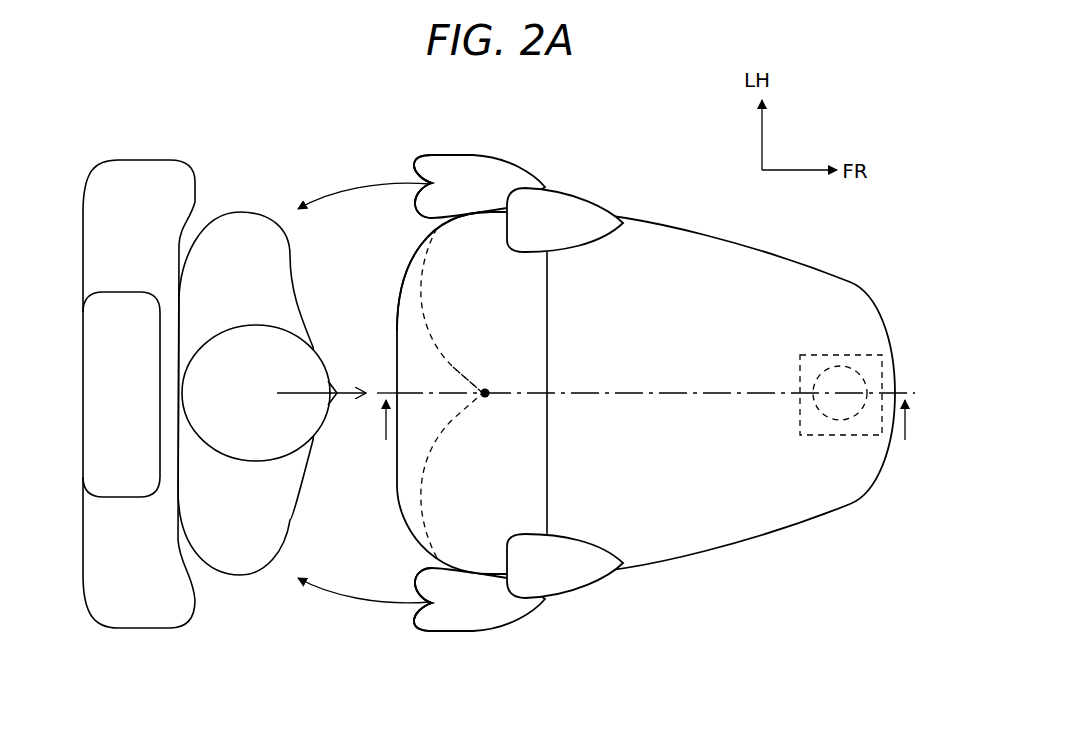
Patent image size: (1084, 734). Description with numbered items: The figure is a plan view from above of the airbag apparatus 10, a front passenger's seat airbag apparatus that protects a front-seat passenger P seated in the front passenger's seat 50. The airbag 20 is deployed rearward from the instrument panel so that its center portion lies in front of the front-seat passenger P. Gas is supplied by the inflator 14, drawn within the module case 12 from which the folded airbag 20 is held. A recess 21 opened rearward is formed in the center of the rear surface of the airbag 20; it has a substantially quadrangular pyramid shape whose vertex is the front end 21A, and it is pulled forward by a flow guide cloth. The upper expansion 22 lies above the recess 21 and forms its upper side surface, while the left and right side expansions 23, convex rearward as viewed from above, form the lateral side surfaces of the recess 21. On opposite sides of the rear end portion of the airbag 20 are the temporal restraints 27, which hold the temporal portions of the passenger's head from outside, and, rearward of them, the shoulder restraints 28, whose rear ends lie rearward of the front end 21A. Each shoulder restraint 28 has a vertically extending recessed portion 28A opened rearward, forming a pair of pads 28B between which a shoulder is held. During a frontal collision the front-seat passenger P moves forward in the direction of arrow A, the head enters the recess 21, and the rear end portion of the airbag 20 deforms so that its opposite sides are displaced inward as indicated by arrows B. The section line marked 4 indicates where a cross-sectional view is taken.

The airbag apparatus 10 is at (656, 158).
The module case 12 is at (816, 355).
The inflator 14 is at (813, 386).
The airbag 20 is at (728, 555).
The recess 21 is at (455, 362).
The front end of the recess 21A is at (486, 398).
The upper expansion 22 is at (400, 293).
The side expansion 23 is at (423, 243).
The temporal restraint 27 is at (579, 190).
The shoulder restraint 28 is at (448, 155).
The recessed portion 28A is at (430, 185).
The pad 28B is at (415, 163).
The section line 4 is at (646, 426).
The front passenger's seat 50 is at (135, 160).
The front-seat passenger P is at (238, 212).
The arrow A is at (292, 390).
The arrows B is at (350, 188).